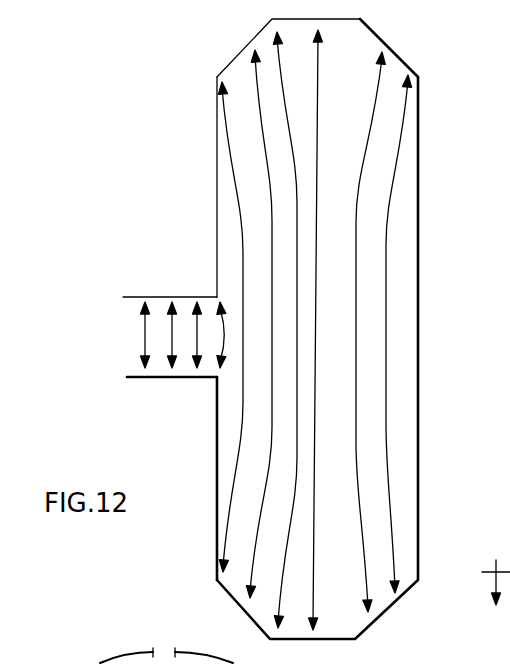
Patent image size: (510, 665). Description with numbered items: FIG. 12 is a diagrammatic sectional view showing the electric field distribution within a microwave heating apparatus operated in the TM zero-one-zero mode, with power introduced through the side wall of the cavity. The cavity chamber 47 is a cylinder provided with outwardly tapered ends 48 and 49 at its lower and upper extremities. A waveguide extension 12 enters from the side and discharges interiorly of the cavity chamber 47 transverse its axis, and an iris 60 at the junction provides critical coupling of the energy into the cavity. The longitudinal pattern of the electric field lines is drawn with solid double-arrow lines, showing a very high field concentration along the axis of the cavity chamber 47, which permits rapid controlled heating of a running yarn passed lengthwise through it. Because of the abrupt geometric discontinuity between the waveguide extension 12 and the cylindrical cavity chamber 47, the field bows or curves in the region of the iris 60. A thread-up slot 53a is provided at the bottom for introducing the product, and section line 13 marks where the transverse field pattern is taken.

The outwardly tapered end 49 is at (400, 53).
The outwardly tapered end 48 is at (392, 606).
The cavity chamber 47 is at (217, 426).
The waveguide extension 12 is at (142, 380).
The iris 60 is at (218, 299).
The thread-up slot 53a is at (163, 653).
The line 13— 13 is at (488, 583).